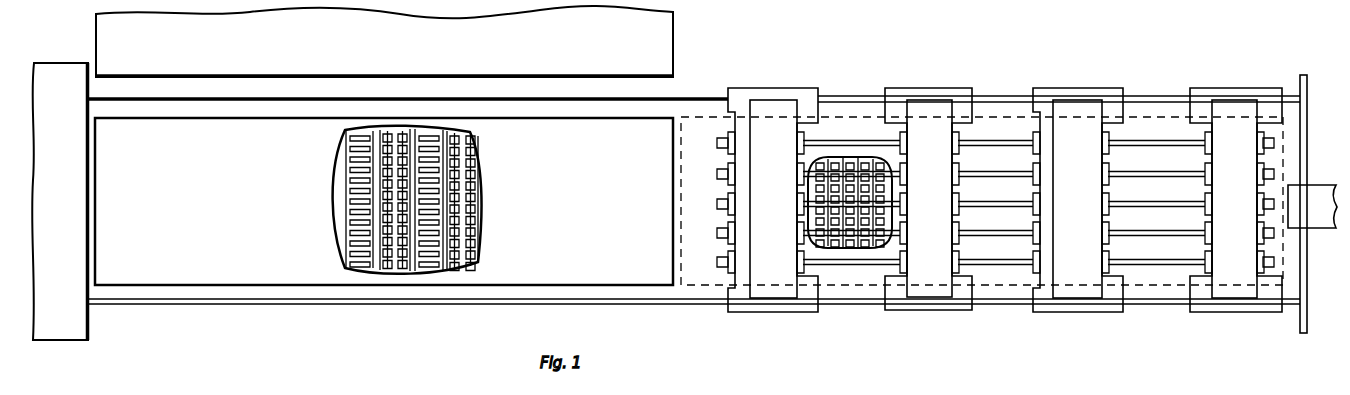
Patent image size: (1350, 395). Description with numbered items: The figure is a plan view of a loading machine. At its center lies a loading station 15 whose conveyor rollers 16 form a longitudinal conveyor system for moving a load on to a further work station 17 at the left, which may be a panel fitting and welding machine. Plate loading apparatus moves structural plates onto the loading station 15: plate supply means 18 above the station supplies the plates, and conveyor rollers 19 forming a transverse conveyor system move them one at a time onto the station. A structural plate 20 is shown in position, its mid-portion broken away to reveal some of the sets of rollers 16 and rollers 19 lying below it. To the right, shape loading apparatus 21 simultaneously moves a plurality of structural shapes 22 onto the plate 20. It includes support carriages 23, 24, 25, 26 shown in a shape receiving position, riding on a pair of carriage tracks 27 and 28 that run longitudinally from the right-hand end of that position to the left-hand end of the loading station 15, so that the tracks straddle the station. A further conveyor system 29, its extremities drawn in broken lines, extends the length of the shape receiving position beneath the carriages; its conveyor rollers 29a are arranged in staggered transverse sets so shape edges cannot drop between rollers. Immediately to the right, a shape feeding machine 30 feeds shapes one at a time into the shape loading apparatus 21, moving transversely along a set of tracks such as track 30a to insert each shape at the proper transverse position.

The loading station 15 is at (264, 338).
The conveyor rollers 16 is at (478, 173).
The work station 17 is at (70, 342).
The plate supply means 18 is at (675, 33).
The conveyor rollers 19 is at (336, 238).
The structural plate 20 is at (205, 286).
The shape loading apparatus 21 is at (1056, 339).
The structural shapes 22 is at (1180, 176).
The support carriage 23 is at (1208, 86).
The support carriage 24 is at (1080, 86).
The support carriage 25 is at (930, 86).
The support carriage 26 is at (778, 86).
The carriage track 27 is at (500, 305).
The carriage track 28 is at (228, 97).
The conveyor system 29 is at (702, 116).
The conveyor rollers 29a is at (849, 246).
The shape feeding machine 30 is at (1326, 184).
The track 30a is at (1308, 110).